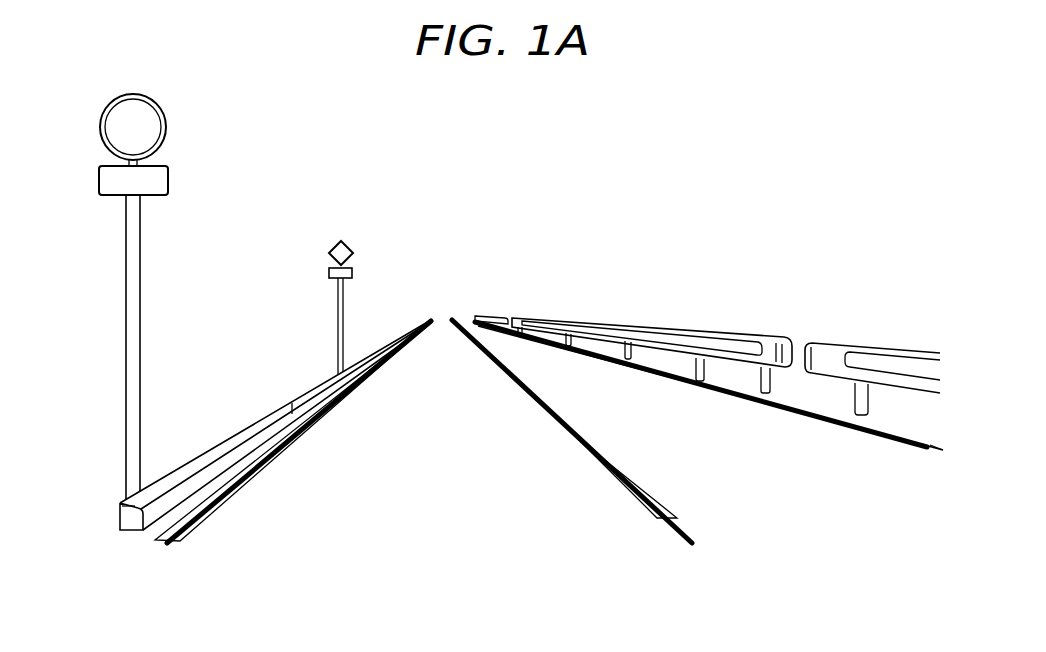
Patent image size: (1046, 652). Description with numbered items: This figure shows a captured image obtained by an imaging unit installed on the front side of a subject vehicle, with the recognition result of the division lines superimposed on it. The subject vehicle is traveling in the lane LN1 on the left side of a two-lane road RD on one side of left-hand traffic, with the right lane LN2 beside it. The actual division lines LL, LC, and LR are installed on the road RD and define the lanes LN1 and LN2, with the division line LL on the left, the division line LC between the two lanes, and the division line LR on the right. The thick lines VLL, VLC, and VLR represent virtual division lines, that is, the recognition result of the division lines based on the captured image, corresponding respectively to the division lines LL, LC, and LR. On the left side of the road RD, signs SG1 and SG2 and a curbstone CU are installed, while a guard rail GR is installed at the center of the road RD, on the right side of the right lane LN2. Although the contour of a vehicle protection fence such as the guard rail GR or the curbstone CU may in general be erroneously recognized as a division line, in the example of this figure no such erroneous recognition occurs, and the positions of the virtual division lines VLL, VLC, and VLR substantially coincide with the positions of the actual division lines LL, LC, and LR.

The sign SG1 is at (166, 122).
The sign SG2 is at (347, 243).
The curbstone CU is at (222, 438).
The division line LL is at (222, 507).
The virtual division line VLL is at (247, 482).
The virtual division line VLC is at (560, 416).
The division line LC is at (615, 483).
The virtual division line VLR is at (707, 389).
The division line LR is at (790, 414).
The road RD is at (463, 321).
The guard rail GR is at (740, 335).
The lane LN1 is at (383, 533).
The lane LN2 is at (795, 515).